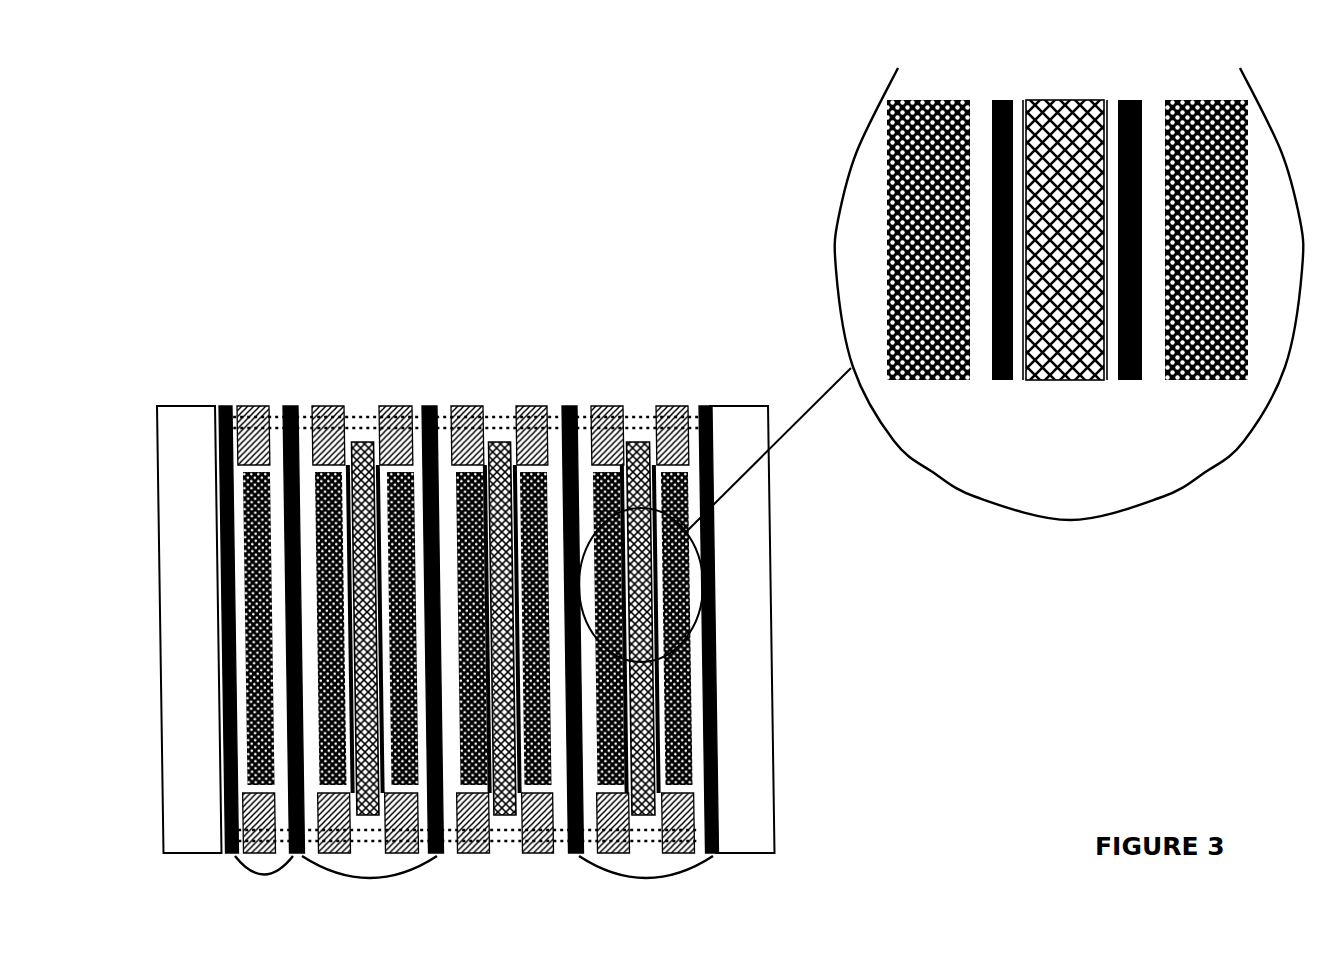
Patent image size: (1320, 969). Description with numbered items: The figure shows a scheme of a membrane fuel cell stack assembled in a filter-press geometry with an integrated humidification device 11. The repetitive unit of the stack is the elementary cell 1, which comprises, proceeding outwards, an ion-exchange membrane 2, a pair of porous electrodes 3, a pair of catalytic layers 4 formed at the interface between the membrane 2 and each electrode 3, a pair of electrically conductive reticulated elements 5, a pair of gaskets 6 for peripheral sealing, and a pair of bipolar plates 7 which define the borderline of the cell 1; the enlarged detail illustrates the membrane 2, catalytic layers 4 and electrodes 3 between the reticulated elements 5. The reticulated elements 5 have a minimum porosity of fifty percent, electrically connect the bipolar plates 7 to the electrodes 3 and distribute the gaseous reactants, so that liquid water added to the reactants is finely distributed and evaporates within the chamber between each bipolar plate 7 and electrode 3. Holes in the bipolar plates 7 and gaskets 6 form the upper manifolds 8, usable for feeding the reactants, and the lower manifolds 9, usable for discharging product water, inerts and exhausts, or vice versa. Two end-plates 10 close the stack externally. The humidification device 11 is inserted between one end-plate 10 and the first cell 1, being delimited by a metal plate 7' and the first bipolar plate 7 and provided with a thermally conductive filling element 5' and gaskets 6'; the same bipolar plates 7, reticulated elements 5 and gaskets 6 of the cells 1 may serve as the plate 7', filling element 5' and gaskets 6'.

The elementary cell 1 is at (507, 884).
The ion-exchange membrane 2 is at (358, 443).
The porous electrode 3 is at (1007, 380).
The catalytic layer 4 is at (1025, 355).
The electrically conductive reticulated element 5 is at (1067, 280).
The thermally conductive filling element 5' is at (251, 536).
The gasket 6 is at (505, 602).
The gasket of humidification device 6' is at (258, 597).
The bipolar plate 7 is at (507, 574).
The metal plate 7' is at (222, 589).
The upper manifold 8 is at (445, 422).
The lower manifold 9 is at (452, 832).
The end-plate 10 is at (185, 492).
The humidification device 11 is at (264, 886).